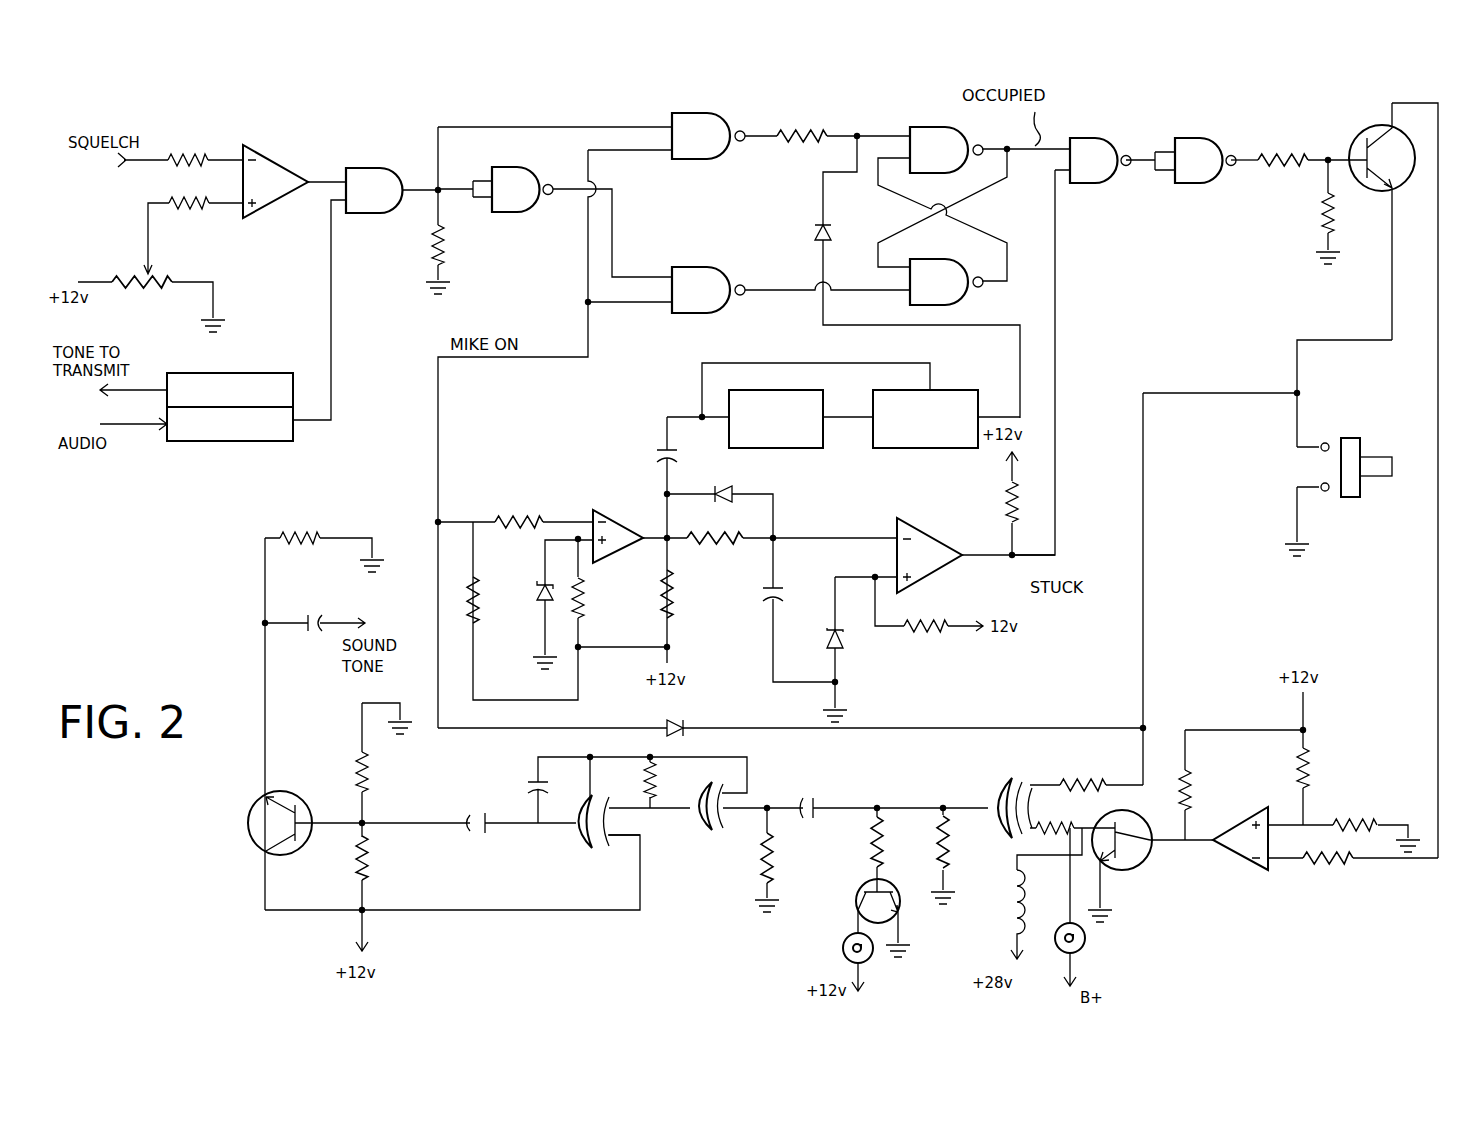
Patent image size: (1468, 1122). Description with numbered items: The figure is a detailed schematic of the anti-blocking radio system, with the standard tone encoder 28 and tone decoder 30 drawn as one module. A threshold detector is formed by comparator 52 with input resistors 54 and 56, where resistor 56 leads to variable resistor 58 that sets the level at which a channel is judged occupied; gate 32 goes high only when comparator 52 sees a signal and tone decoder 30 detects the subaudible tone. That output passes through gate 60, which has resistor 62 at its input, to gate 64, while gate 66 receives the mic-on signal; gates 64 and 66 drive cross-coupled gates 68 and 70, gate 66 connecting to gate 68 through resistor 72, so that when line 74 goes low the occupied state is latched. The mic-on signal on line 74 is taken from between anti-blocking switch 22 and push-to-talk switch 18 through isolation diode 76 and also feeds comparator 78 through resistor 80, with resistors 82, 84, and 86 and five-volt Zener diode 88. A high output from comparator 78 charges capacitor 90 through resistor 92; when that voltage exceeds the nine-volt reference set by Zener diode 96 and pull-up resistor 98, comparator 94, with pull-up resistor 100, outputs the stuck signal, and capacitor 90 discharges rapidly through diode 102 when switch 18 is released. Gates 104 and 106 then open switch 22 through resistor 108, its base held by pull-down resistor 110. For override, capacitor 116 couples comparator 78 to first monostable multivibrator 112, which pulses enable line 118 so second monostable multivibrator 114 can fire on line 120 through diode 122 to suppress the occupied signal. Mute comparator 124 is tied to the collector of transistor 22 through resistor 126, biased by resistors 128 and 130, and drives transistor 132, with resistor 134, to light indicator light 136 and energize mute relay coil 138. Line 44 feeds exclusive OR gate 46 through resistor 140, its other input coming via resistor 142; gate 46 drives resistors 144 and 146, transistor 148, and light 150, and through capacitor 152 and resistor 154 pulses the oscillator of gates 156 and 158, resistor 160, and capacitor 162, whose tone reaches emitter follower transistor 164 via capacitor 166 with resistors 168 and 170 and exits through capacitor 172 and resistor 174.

The push-to-talk switch 18 is at (1360, 497).
The anti-blocking switch 22 is at (1375, 125).
The tone encoder 28 is at (230, 368).
The tone decoder 30 is at (243, 442).
The gate 32 is at (374, 162).
The line 44 is at (1085, 820).
The exclusive OR gate 46 is at (988, 794).
The comparator 52 is at (292, 205).
The resistor 54 is at (191, 134).
The resistor 56 is at (213, 190).
The variable resistor 58 is at (165, 261).
The gate 60 is at (513, 219).
The resistor 62 is at (408, 250).
The gate 64 is at (708, 266).
The gate 66 is at (708, 118).
The gate 68 is at (925, 127).
The gate 70 is at (918, 247).
The resistor 72 is at (802, 108).
The line 74 is at (588, 338).
The isolation diode 76 is at (790, 712).
The comparator 78 is at (614, 512).
The resistor 80 is at (519, 495).
The resistor 82 is at (487, 587).
The resistor 84 is at (600, 604).
The resistor 86 is at (694, 594).
The Zener diode 88 is at (525, 625).
The capacitor 90 is at (799, 610).
The resistor 92 is at (715, 559).
The comparator 94 is at (929, 543).
The Zener diode 96 is at (856, 649).
The pull-up resistor 98 is at (929, 644).
The pull-up resistor 100 is at (1052, 503).
The diode 102 is at (722, 502).
The gate 104 is at (1100, 189).
The gate 106 is at (1197, 189).
The resistor 108 is at (1283, 186).
The pull-down resistor 110 is at (1303, 212).
The first monostable multivibrator 112 is at (776, 444).
The second monostable multivibrator 114 is at (915, 441).
The capacitor 116 is at (631, 433).
The enable line 118 is at (860, 415).
The line 120 is at (1060, 343).
The diode 122 is at (884, 277).
The comparator 124 is at (1240, 861).
The resistor 126 is at (1338, 862).
The resistor 128 is at (1335, 784).
The resistor 130 is at (1376, 817).
The transistor 132 is at (1148, 862).
The resistor 134 is at (1212, 785).
The indicator light 136 is at (1106, 954).
The mute relay coil 138 is at (991, 914).
The resistor 140 is at (1072, 813).
The resistor 142 is at (1086, 762).
The resistor 144 is at (960, 856).
The resistor 146 is at (849, 850).
The transistor 148 is at (852, 918).
The light 150 is at (825, 962).
The capacitor 152 is at (877, 789).
The resistor 154 is at (765, 870).
The gate 156 is at (713, 828).
The gate 158 is at (627, 839).
The resistor 160 is at (636, 796).
The capacitor 162 is at (613, 773).
The emitter follower transistor 164 is at (250, 828).
The capacitor 166 is at (495, 806).
The resistor 168 is at (333, 758).
The resistor 170 is at (330, 893).
The capacitor 172 is at (315, 648).
The resistor 174 is at (324, 529).